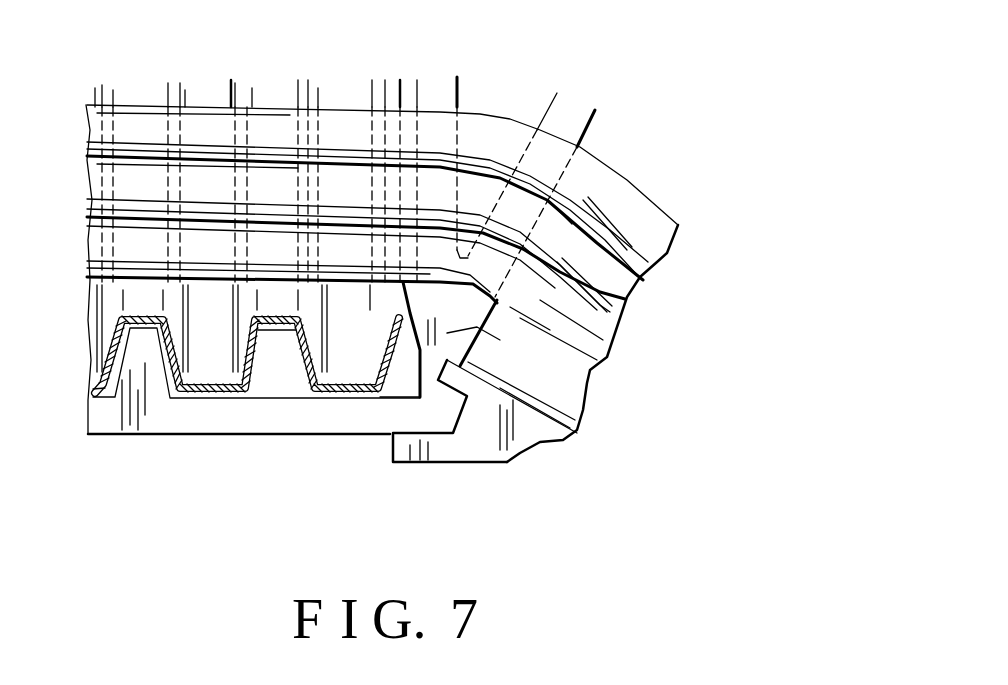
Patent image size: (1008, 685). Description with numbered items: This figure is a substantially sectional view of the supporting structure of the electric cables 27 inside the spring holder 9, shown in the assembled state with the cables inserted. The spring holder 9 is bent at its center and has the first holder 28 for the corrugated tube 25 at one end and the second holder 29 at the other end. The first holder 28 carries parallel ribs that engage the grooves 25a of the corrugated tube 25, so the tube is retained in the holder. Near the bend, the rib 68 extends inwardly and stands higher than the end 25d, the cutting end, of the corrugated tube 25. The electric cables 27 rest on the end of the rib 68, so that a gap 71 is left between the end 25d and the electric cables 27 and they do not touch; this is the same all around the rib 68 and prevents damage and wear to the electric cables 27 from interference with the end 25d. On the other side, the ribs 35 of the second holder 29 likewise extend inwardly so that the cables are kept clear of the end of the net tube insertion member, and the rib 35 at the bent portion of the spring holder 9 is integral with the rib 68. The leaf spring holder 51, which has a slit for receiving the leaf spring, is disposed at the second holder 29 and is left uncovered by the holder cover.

The spring holder 9 is at (206, 442).
The corrugated tube 25 is at (304, 397).
The grooves of the corrugated tube 25a is at (282, 367).
The end of the corrugated tube 25d is at (390, 395).
The electric cables 27 is at (500, 123).
The first holder 28 is at (343, 435).
The second holder 29 is at (587, 400).
The ribs of the second holder 35 is at (588, 122).
The leaf spring holder 51 is at (483, 447).
The rib 68 is at (457, 93).
The gap 71 is at (410, 308).